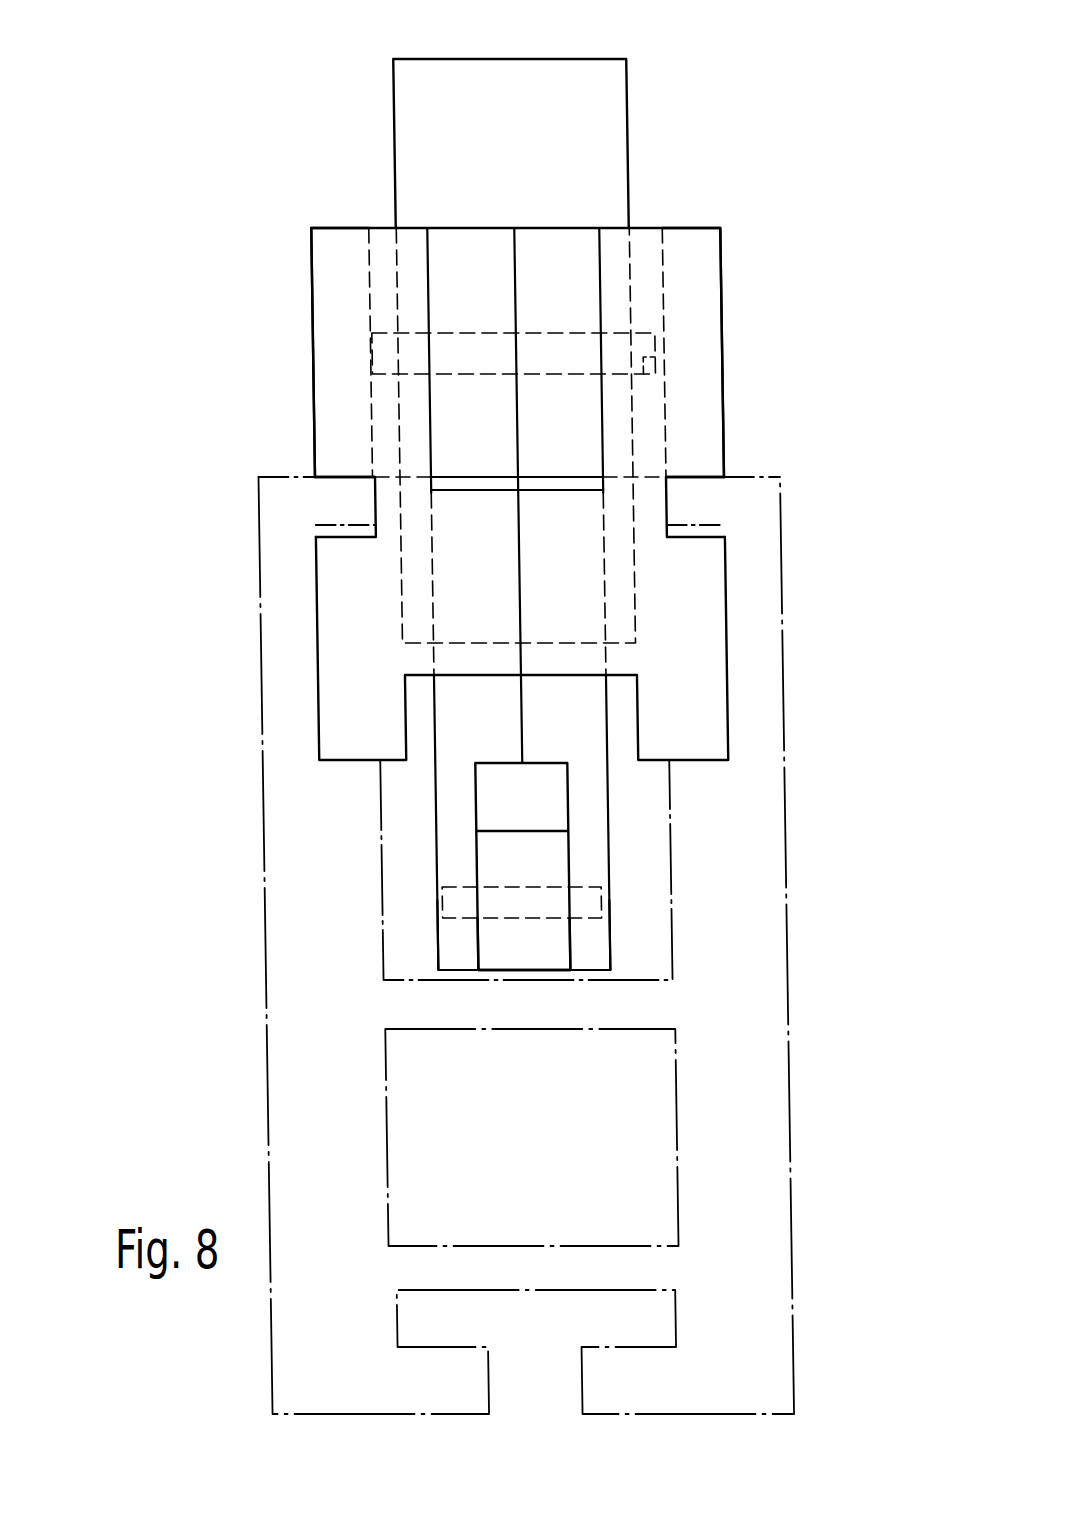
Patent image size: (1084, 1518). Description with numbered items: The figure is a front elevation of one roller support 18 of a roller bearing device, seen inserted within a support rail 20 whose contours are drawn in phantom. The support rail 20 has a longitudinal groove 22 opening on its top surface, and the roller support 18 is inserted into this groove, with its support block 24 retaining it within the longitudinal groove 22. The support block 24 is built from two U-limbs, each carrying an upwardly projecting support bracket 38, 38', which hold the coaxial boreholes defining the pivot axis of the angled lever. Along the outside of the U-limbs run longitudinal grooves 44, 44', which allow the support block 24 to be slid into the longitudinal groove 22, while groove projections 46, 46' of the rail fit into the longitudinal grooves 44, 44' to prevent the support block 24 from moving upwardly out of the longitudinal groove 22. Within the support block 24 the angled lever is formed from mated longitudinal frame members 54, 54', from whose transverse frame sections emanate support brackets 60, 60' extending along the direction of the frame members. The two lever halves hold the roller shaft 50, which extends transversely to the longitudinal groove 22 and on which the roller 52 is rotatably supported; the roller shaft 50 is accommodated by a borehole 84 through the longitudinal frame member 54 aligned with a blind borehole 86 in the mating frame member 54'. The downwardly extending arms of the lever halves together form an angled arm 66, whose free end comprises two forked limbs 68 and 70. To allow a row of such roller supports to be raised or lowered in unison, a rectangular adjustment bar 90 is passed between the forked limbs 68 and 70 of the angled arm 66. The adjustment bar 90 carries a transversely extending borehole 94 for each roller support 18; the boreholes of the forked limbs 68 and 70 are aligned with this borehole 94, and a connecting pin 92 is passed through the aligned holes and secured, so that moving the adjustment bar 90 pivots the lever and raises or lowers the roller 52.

The roller support 18 is at (270, 346).
The support rail 20 is at (795, 845).
The longitudinal groove 22 is at (390, 813).
The support block 24 is at (310, 648).
The support bracket 38 is at (328, 308).
The support bracket 38' is at (733, 302).
The longitudinal groove 44 is at (245, 517).
The longitudinal groove 44' is at (751, 427).
The groove projection 46 is at (242, 467).
The groove projection 46' is at (767, 457).
The roller shaft 50 is at (480, 375).
The roller 52 is at (497, 95).
The longitudinal frame member 54 is at (297, 324).
The longitudinal frame member 54' is at (746, 322).
The support bracket 60 is at (458, 309).
The support bracket 60' is at (575, 314).
The angled arm 66 is at (448, 840).
The forked limb 68 is at (458, 957).
The forked limb 70 is at (587, 947).
The borehole 84 is at (378, 376).
The blind borehole 86 is at (663, 352).
The adjustment bar 90 is at (533, 953).
The connecting pin 92 is at (518, 905).
The borehole 94 is at (525, 916).